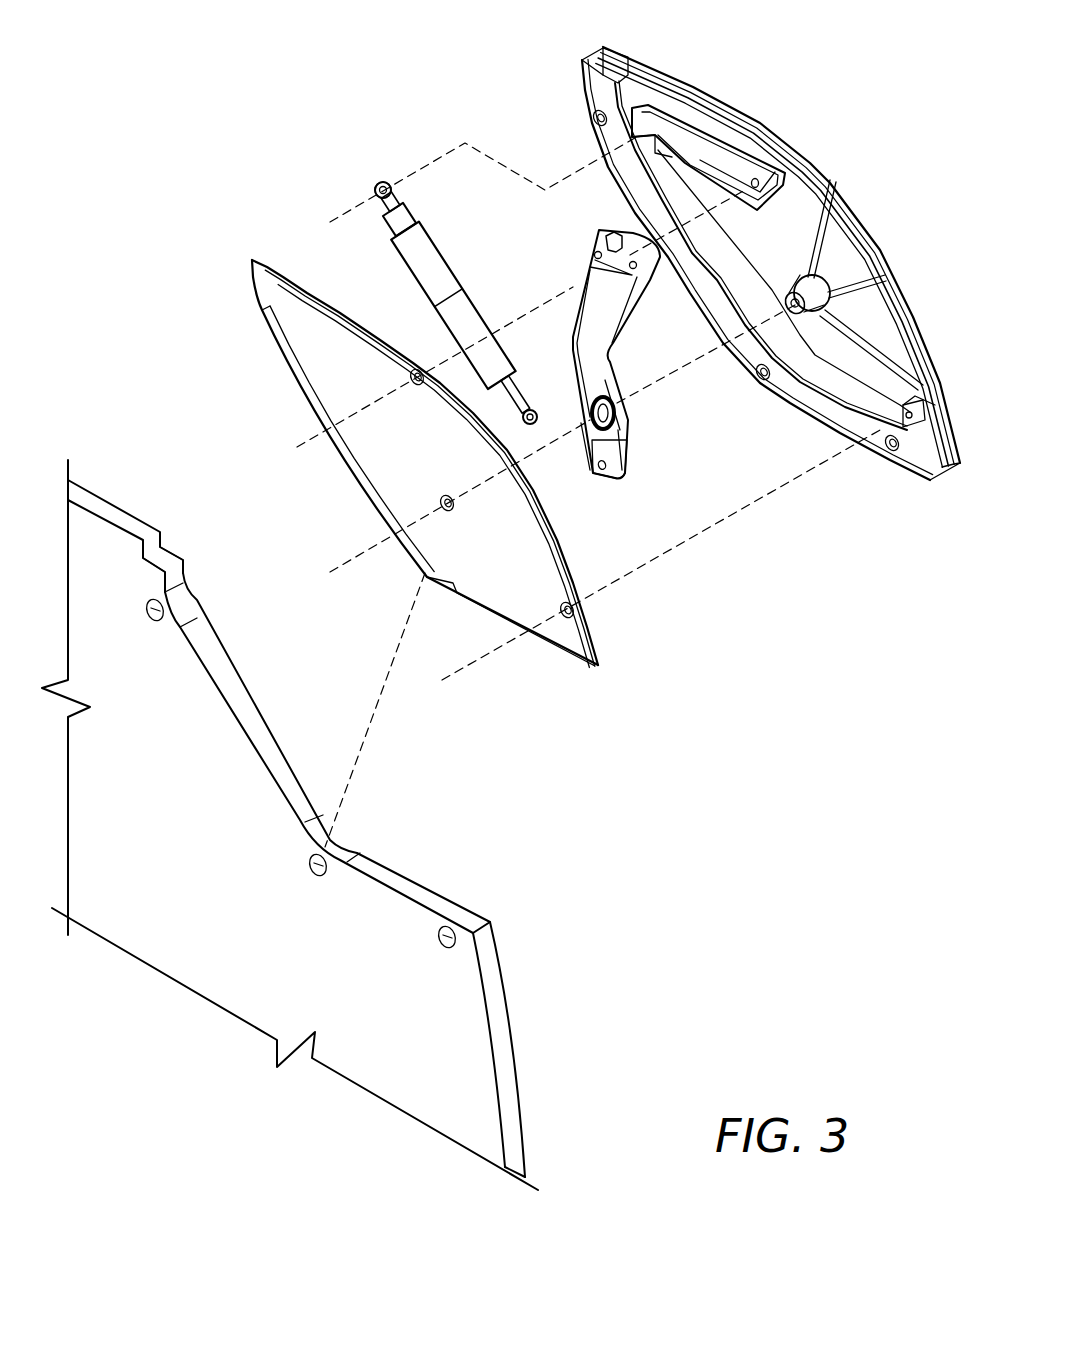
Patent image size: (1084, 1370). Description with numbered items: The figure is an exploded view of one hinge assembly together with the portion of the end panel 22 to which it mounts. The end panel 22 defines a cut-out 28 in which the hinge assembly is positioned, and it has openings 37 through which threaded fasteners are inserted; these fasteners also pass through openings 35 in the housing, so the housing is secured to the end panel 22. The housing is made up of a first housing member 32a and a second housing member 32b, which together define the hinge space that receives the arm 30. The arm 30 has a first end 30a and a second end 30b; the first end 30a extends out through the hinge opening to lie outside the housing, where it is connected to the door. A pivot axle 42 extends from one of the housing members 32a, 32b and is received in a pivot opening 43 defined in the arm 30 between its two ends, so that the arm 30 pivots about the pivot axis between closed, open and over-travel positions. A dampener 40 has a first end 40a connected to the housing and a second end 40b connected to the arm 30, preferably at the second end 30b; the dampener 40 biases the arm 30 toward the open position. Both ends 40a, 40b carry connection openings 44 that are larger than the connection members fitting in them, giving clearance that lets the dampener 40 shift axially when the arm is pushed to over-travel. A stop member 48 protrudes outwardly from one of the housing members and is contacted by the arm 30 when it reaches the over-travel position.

The end panel 22 is at (192, 855).
The cut-out 28 is at (227, 680).
The openings 37 is at (150, 606).
The second housing member 32b is at (287, 310).
The dampener 40 is at (457, 267).
The first end of the dampener 40a is at (392, 200).
The second end of the dampener 40b is at (510, 385).
The connection openings 44 is at (377, 187).
The arm 30 is at (618, 366).
The first end of the arm 30a is at (628, 228).
The second end of the arm 30b is at (620, 453).
The pivot opening 43 is at (597, 425).
The first housing member 32a is at (771, 263).
The openings 35 is at (593, 113).
The pivot axle 42 is at (807, 300).
The stop member 48 is at (780, 188).